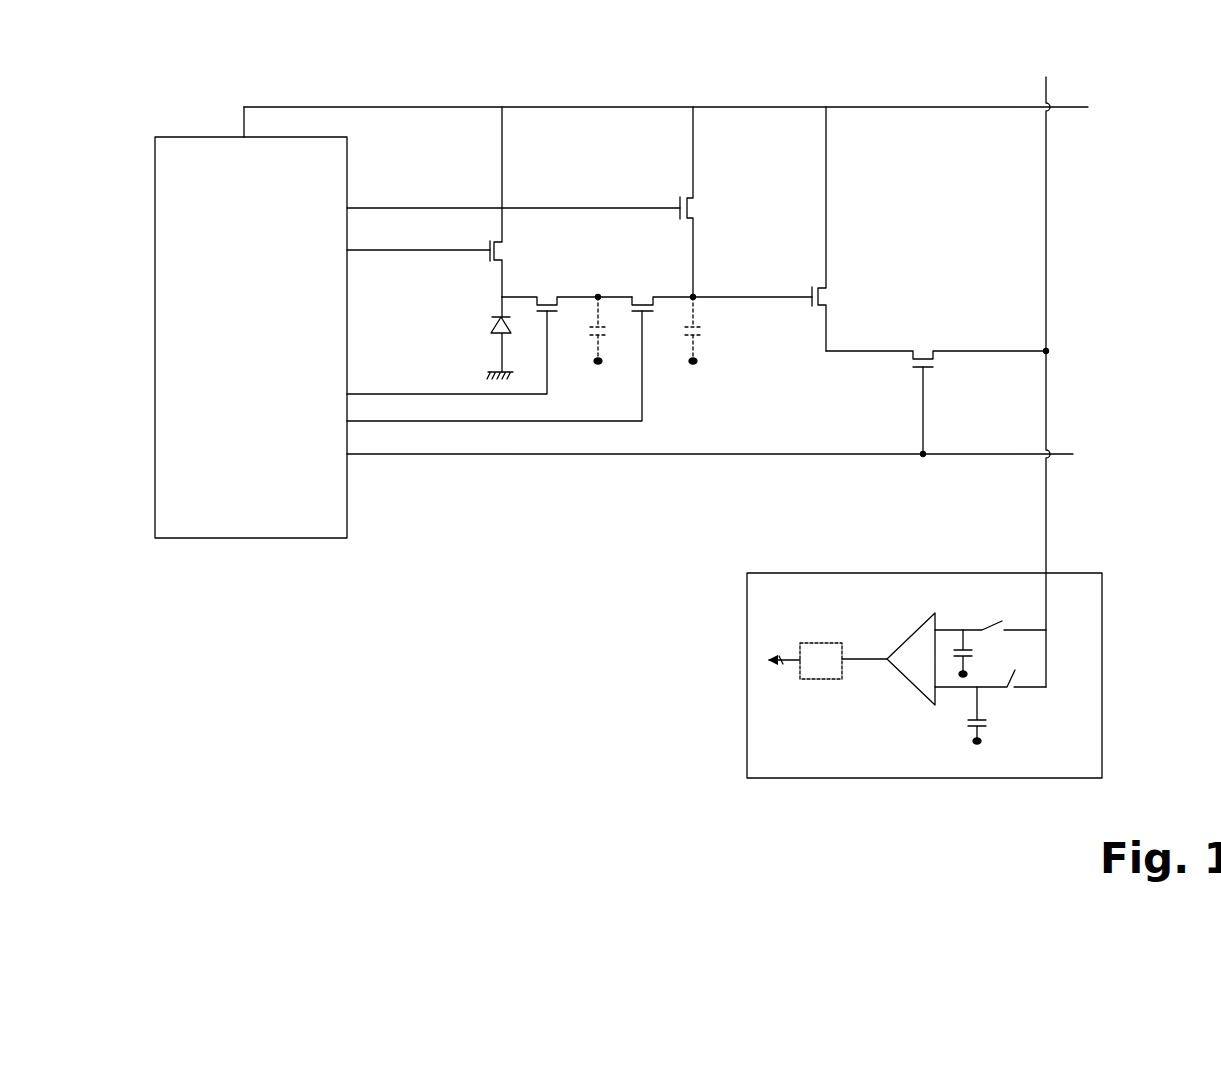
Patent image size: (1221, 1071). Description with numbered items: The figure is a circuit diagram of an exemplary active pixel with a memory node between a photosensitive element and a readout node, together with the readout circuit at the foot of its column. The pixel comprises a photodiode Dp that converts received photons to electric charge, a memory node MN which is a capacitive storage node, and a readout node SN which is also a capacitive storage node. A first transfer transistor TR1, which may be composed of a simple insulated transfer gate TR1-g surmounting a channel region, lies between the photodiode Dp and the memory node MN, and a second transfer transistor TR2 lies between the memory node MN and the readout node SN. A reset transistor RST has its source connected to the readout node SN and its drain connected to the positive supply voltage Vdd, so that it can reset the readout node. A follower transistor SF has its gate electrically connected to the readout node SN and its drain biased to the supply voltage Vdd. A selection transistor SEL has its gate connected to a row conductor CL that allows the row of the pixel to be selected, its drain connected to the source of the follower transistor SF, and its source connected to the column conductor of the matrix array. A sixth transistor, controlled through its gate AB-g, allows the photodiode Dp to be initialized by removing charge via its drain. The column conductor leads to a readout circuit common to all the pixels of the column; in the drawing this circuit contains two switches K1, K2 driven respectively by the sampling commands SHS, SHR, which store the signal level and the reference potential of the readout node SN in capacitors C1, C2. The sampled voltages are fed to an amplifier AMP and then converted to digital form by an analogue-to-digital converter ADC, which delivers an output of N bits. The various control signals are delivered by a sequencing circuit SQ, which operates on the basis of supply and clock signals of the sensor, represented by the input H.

The sequencing circuit SQ is at (177, 538).
The clock / control signal input H is at (193, 135).
The positive supply voltage Vdd is at (683, 112).
The reset transistor RST is at (541, 202).
The gate of initialization transistor AB-g is at (424, 202).
The photodiode Dp is at (490, 338).
The first transfer transistor TR1 is at (567, 294).
The transfer gate of first transfer transistor TR1-g is at (471, 355).
The memory node MN is at (597, 296).
The second transfer transistor TR2 is at (717, 294).
The readout node SN is at (695, 296).
The follower transistor SF is at (840, 229).
The selection transistor SEL is at (937, 349).
The row conductor CL is at (1102, 600).
The first sampling switch K1 is at (990, 637).
The signal sampling command SHS is at (987, 624).
The second sampling switch K2 is at (990, 676).
The reference sampling command SHR is at (1010, 693).
The first sampling capacitor C1 is at (971, 653).
The second sampling capacitor C2 is at (966, 715).
The differential amplifier AMP is at (888, 659).
The analogue-to-digital converter ADC is at (821, 661).
The digital output of N bits is at (780, 651).